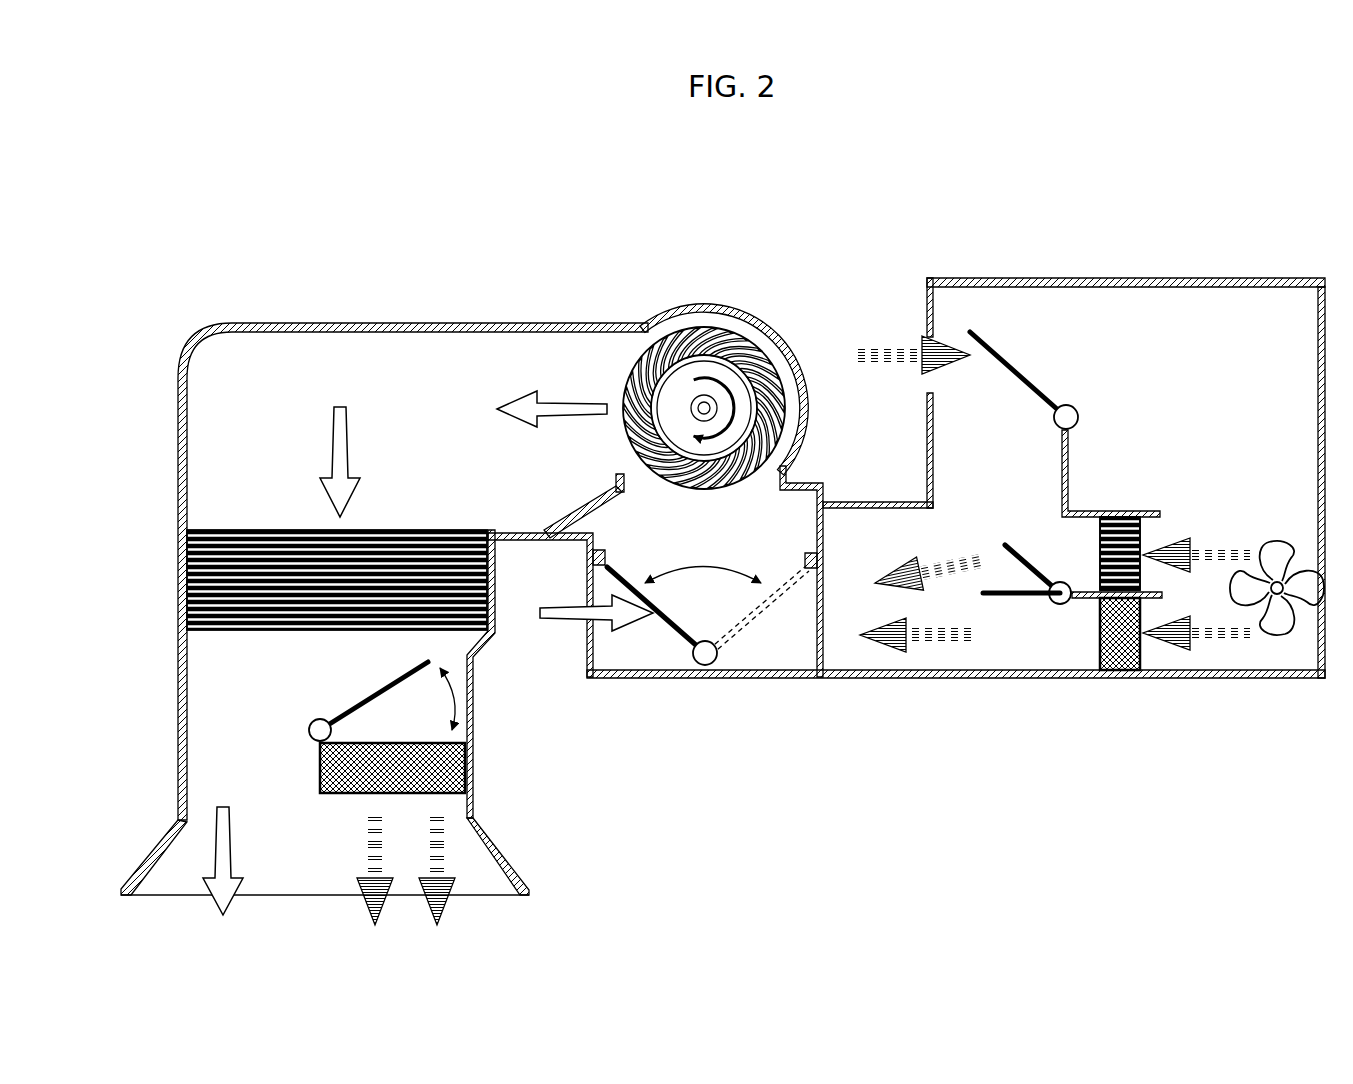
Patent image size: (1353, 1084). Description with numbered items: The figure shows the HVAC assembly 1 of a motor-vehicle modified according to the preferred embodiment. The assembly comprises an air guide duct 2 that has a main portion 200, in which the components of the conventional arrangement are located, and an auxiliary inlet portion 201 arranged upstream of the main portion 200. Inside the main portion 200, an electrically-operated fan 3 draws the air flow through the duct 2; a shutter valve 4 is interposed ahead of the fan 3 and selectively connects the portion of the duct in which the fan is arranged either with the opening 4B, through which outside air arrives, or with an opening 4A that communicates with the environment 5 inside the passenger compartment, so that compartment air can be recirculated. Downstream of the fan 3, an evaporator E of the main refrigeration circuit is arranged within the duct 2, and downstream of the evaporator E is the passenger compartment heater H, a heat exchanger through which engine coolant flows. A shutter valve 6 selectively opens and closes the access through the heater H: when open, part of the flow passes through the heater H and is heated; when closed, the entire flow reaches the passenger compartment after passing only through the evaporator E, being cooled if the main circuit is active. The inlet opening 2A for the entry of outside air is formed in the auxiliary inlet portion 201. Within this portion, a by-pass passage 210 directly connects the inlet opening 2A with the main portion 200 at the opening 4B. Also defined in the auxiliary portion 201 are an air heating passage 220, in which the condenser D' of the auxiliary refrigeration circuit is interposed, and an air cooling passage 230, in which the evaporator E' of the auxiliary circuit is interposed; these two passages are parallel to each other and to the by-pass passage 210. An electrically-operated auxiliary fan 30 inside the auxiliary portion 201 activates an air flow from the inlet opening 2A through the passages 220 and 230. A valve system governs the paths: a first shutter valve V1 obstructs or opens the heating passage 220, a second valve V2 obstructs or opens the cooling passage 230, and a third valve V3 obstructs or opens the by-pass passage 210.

The HVAC assembly 1 is at (167, 283).
The air guide duct 2 is at (382, 311).
The main portion 200 is at (670, 312).
The electrically-operated fan 3 is at (758, 350).
The inlet opening 2A is at (928, 318).
The auxiliary inlet portion 201 is at (1218, 278).
The by-pass passage 210 is at (953, 462).
The air cooling passage 230 is at (1148, 518).
The evaporator of the auxiliary refrigeration circuit E' is at (1161, 533).
The air heating passage 220 is at (1135, 675).
The condenser of the auxiliary refrigeration circuit D' is at (1166, 658).
The auxiliary fan 30 is at (1283, 528).
The third valve V3 is at (1022, 370).
The second valve V2 is at (1030, 560).
The first shutter valve V1 is at (1000, 598).
The shutter valve 4 is at (676, 630).
The opening 4A is at (588, 647).
The opening 4B is at (803, 572).
The environment inside the passenger compartment 5 is at (522, 693).
The evaporator E is at (337, 618).
The shutter valve 6 is at (356, 705).
The passenger compartment heater H is at (349, 795).